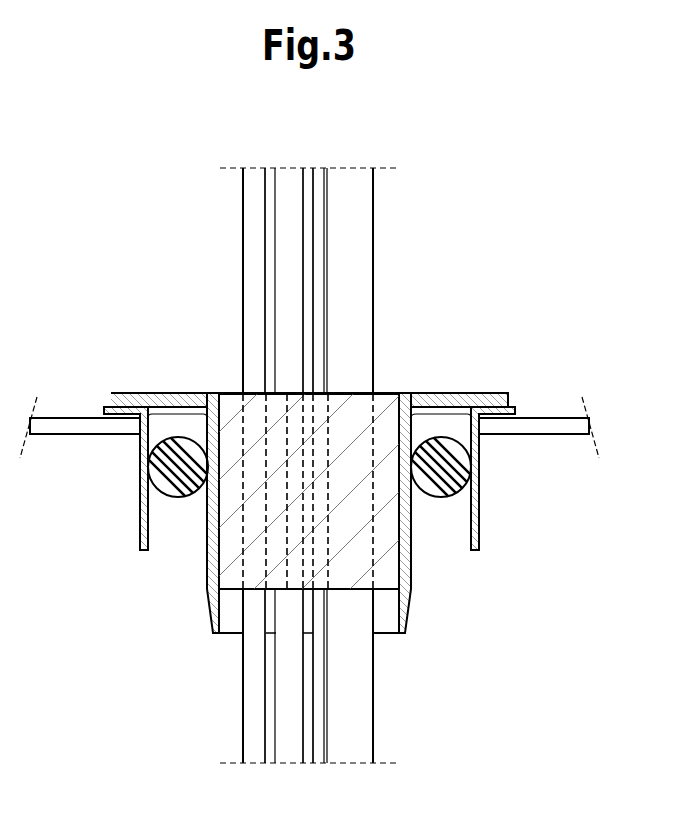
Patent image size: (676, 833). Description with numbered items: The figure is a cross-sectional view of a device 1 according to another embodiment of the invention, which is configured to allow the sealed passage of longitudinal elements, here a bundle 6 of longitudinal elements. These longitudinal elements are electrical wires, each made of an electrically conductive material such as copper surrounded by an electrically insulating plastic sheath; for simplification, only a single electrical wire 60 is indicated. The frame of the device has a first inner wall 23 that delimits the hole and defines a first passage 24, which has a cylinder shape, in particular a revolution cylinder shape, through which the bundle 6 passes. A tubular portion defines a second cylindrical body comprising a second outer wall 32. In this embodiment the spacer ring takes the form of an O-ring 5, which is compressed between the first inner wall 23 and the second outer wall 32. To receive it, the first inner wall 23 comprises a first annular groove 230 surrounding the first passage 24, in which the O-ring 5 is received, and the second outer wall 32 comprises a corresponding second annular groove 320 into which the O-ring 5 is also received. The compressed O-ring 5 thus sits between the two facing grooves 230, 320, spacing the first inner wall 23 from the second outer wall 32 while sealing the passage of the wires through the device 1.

The device 1 is at (185, 205).
The bundle of longitudinal elements 6 is at (412, 256).
The electrical wire 60 is at (243, 340).
The O-ring 5 is at (437, 445).
The first inner wall 23 is at (148, 533).
The first annular groove 230 is at (470, 467).
The first passage 24 is at (187, 528).
The second outer wall 32 is at (208, 595).
The second annular groove 320 is at (413, 468).